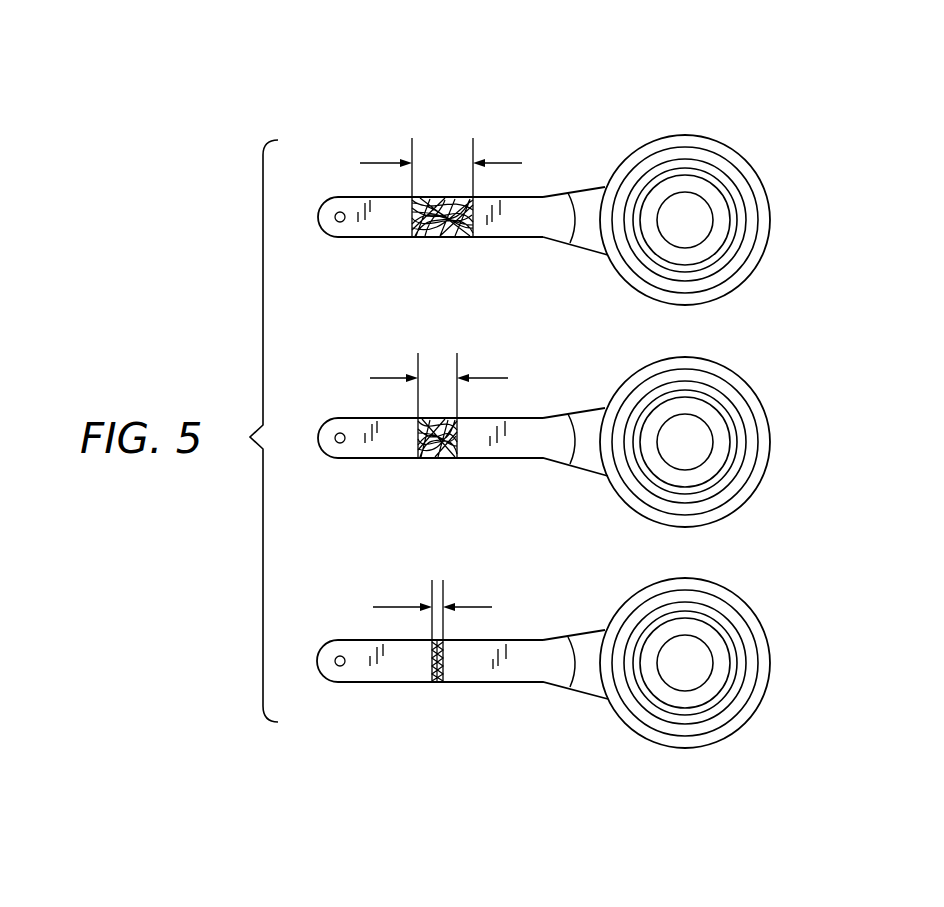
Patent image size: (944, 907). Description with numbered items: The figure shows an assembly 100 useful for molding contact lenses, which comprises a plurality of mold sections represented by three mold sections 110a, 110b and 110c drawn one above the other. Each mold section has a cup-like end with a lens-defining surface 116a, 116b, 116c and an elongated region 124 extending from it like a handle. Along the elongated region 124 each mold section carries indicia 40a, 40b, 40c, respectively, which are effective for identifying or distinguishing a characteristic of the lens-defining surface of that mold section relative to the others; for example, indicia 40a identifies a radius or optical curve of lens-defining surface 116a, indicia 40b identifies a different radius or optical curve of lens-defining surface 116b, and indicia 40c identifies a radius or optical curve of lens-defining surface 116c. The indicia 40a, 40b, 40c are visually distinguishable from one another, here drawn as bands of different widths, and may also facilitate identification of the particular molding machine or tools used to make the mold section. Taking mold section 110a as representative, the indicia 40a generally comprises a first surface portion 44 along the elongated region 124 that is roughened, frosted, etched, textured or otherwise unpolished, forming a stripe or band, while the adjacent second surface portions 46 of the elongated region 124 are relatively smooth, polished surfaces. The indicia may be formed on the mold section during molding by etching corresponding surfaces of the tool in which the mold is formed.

The assembly 100 is at (222, 258).
The second surface portion 46 is at (525, 196).
The first surface portion 44 is at (446, 226).
The indicia 40a is at (445, 160).
The indicia 40b is at (436, 384).
The indicia 40c is at (436, 582).
The elongated region 124 is at (553, 184).
The mold section 110a is at (740, 135).
The mold section 110b is at (746, 377).
The mold section 110c is at (746, 593).
The lens-defining surface 116a is at (703, 218).
The lens-defining surface 116b is at (703, 437).
The lens-defining surface 116c is at (700, 662).